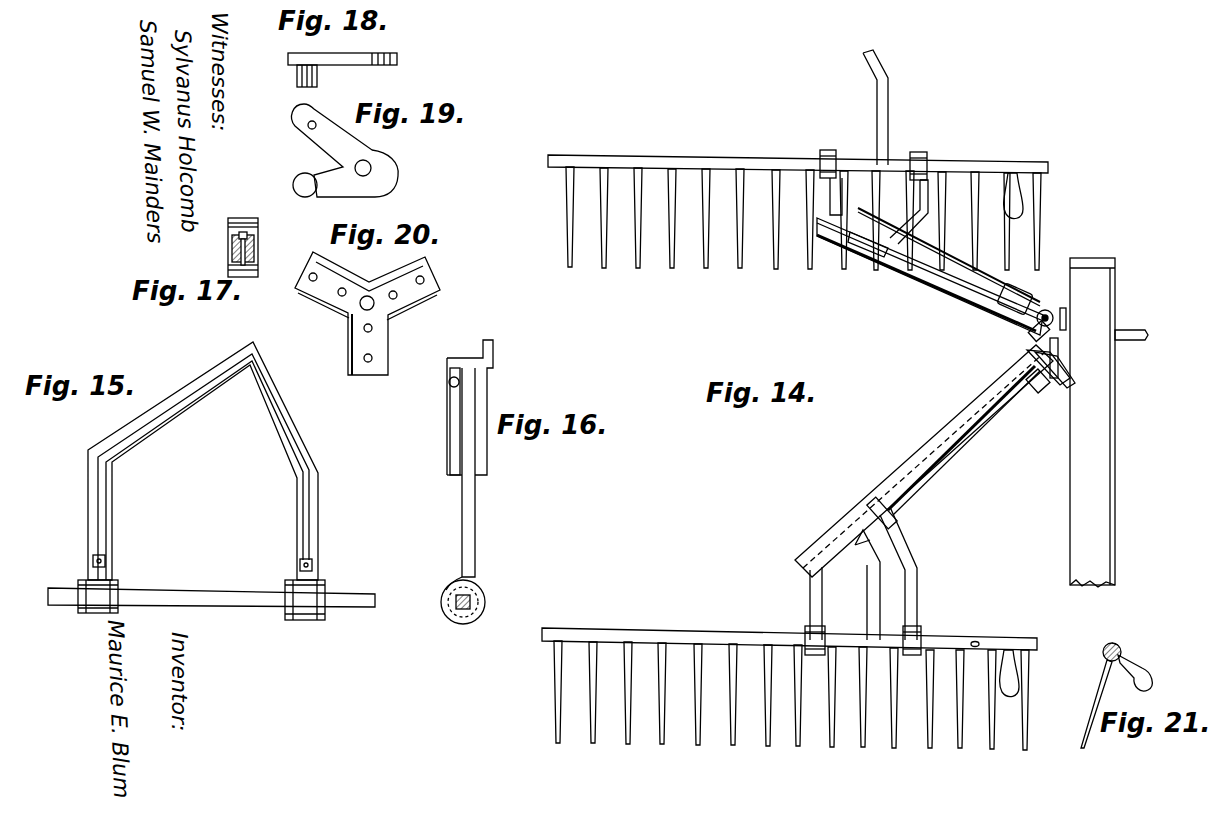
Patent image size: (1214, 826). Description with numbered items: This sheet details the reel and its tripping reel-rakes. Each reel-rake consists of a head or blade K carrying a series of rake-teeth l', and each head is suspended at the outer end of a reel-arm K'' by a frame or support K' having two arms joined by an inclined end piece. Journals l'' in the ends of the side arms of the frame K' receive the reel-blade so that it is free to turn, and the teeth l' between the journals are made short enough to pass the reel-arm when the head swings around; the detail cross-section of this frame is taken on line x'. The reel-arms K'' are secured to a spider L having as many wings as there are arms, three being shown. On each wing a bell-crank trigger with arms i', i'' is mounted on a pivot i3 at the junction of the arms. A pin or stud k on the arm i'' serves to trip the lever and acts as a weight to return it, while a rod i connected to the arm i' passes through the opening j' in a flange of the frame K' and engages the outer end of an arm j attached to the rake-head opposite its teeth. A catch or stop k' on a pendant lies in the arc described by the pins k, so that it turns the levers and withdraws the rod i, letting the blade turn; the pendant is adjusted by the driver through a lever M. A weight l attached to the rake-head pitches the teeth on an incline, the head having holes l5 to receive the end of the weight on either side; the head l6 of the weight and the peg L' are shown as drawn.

In FIG. 14, the head or blade K is at (795, 393).
In FIG. 15, the head or blade K is at (211, 591).
In FIG. 16, the head or blade K is at (479, 600).
In FIG. 17, the head or blade K is at (229, 248).
In FIG. 21, the head or blade K is at (1127, 634).
In FIG. 14, the frame or support K' is at (878, 409).
In FIG. 15, the frame or support K' is at (217, 461).
In FIG. 16, the frame or support K' is at (470, 458).
In FIG. 14, the reel-arm K'' is at (924, 397).
In FIG. 14, the rake-teeth l' is at (797, 458).
In FIG. 21, the rake-teeth l' is at (1092, 704).
In FIG. 14, the journals l'' is at (870, 393).
In FIG. 15, the journals l'' is at (201, 600).
In FIG. 16, the journals l'' is at (470, 608).
In FIG. 17, the journals l'' is at (252, 247).
In FIG. 14, the weight l is at (1011, 447).
In FIG. 21, the weight l is at (1143, 673).
In FIG. 14, the holes l5 is at (978, 642).
In FIG. 21, the head of pin l6 is at (1108, 648).
In FIG. 14, the arm j is at (876, 345).
In FIG. 15, the opening j' is at (203, 467).
In FIG. 16, the opening j' is at (435, 421).
In FIG. 14, the rod i is at (949, 361).
In FIG. 14, the arm of bell-crank lever i' is at (1045, 300).
In FIG. 19, the arm of bell-crank lever i' is at (345, 150).
In FIG. 14, the arm of bell-crank lever i'' is at (1016, 333).
In FIG. 18, the arm of bell-crank lever i'' is at (342, 50).
In FIG. 19, the arm of bell-crank lever i'' is at (350, 176).
In FIG. 14, the pivot i3 is at (1063, 309).
In FIG. 14, the pin or stud k is at (1023, 360).
In FIG. 18, the pin or stud k is at (314, 77).
In FIG. 19, the pin or stud k is at (293, 185).
In FIG. 14, the catch or stop k' is at (1074, 360).
In FIG. 14, the reel-spider L is at (1047, 422).
In FIG. 20, the reel-spider L is at (367, 313).
In FIG. 14, the peg L' is at (1131, 324).
In FIG. 14, the lever M is at (1051, 382).
In FIG. 15, the section line x' is at (179, 561).